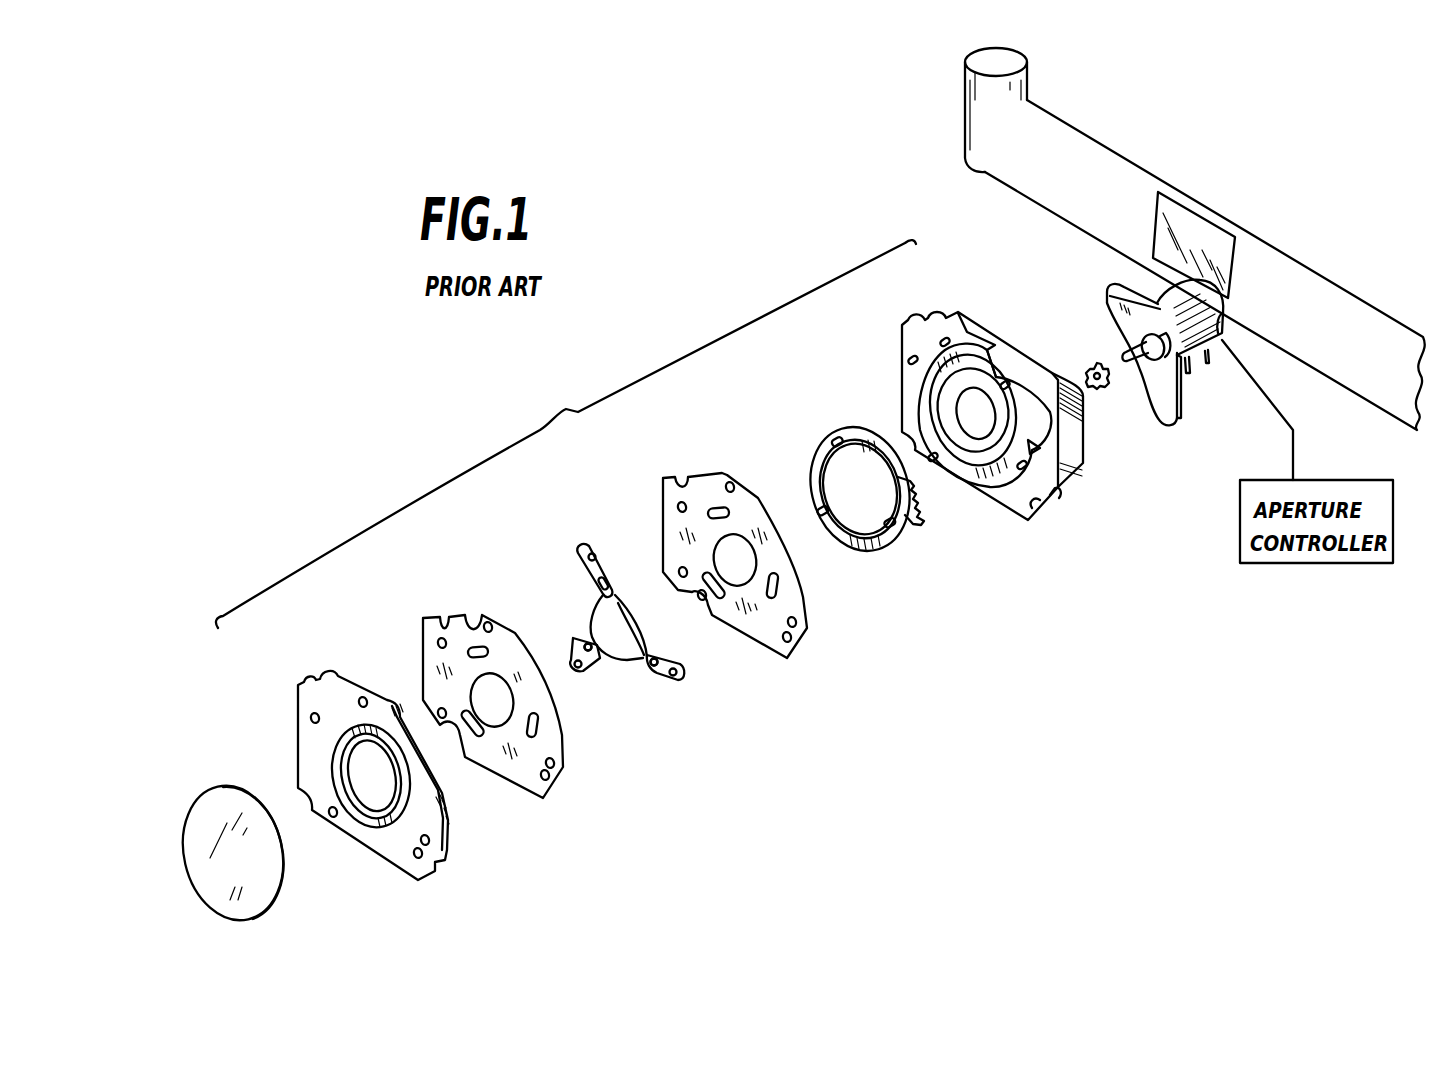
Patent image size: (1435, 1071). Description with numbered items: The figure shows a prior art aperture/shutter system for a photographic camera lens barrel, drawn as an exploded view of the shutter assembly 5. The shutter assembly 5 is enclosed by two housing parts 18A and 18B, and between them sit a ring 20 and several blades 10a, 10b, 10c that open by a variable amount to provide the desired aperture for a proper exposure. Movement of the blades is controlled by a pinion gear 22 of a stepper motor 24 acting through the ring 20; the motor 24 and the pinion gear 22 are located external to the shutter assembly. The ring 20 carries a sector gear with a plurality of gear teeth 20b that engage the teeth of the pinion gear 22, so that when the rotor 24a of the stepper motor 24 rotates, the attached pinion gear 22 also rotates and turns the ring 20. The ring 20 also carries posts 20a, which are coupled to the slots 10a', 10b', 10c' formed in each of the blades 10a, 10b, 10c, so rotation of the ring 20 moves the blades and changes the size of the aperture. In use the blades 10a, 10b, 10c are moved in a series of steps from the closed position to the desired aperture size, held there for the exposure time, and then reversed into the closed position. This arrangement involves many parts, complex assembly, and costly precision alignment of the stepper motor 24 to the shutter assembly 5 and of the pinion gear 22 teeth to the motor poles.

The shutter assembly 5 is at (566, 434).
The housing part 18A is at (343, 697).
The housing part 18B is at (965, 342).
The blade 10a is at (601, 540).
The slot 10a' is at (564, 566).
The blade 10b is at (698, 666).
The slot 10b' is at (661, 624).
The blade 10c is at (561, 629).
The slot 10c' is at (621, 698).
The ring 20 is at (818, 447).
The posts 20a is at (840, 436).
The gear teeth 20b is at (926, 520).
The pinion gear 22 is at (1092, 363).
The stepper motor 24 is at (1155, 302).
The rotor 24a is at (1138, 372).